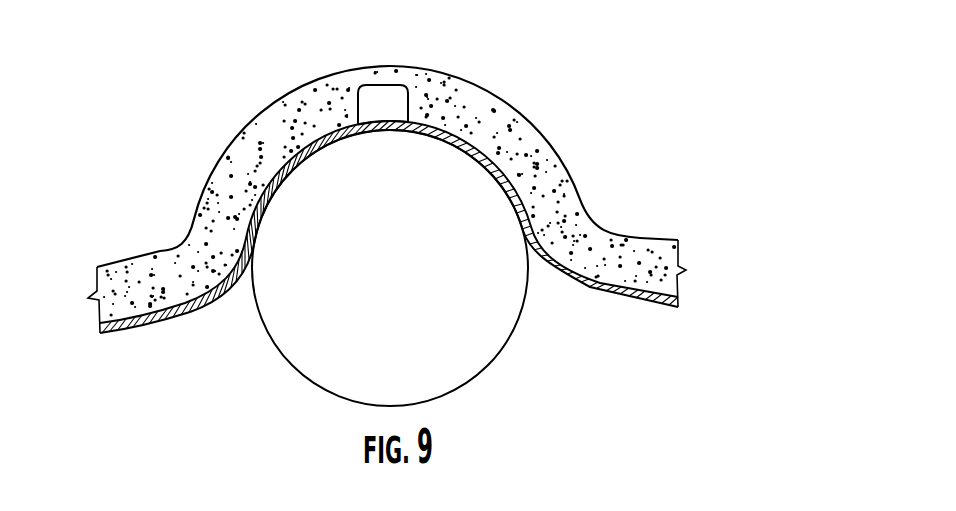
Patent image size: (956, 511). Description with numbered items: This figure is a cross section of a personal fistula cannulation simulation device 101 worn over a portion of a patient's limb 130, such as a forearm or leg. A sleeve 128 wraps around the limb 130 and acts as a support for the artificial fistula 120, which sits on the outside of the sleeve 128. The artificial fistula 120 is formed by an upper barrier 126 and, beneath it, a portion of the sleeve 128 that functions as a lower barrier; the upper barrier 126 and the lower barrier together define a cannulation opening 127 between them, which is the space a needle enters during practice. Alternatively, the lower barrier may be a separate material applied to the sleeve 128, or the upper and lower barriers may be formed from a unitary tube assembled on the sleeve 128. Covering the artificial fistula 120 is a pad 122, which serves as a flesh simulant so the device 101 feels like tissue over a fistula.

The personal simulation device 101 is at (186, 66).
The artificial fistula 120 is at (390, 93).
The pad 122 is at (552, 152).
The upper barrier 126 is at (370, 85).
The cannulation opening 127 is at (383, 112).
The sleeve 128 is at (610, 302).
The patient's limb 130 is at (285, 320).